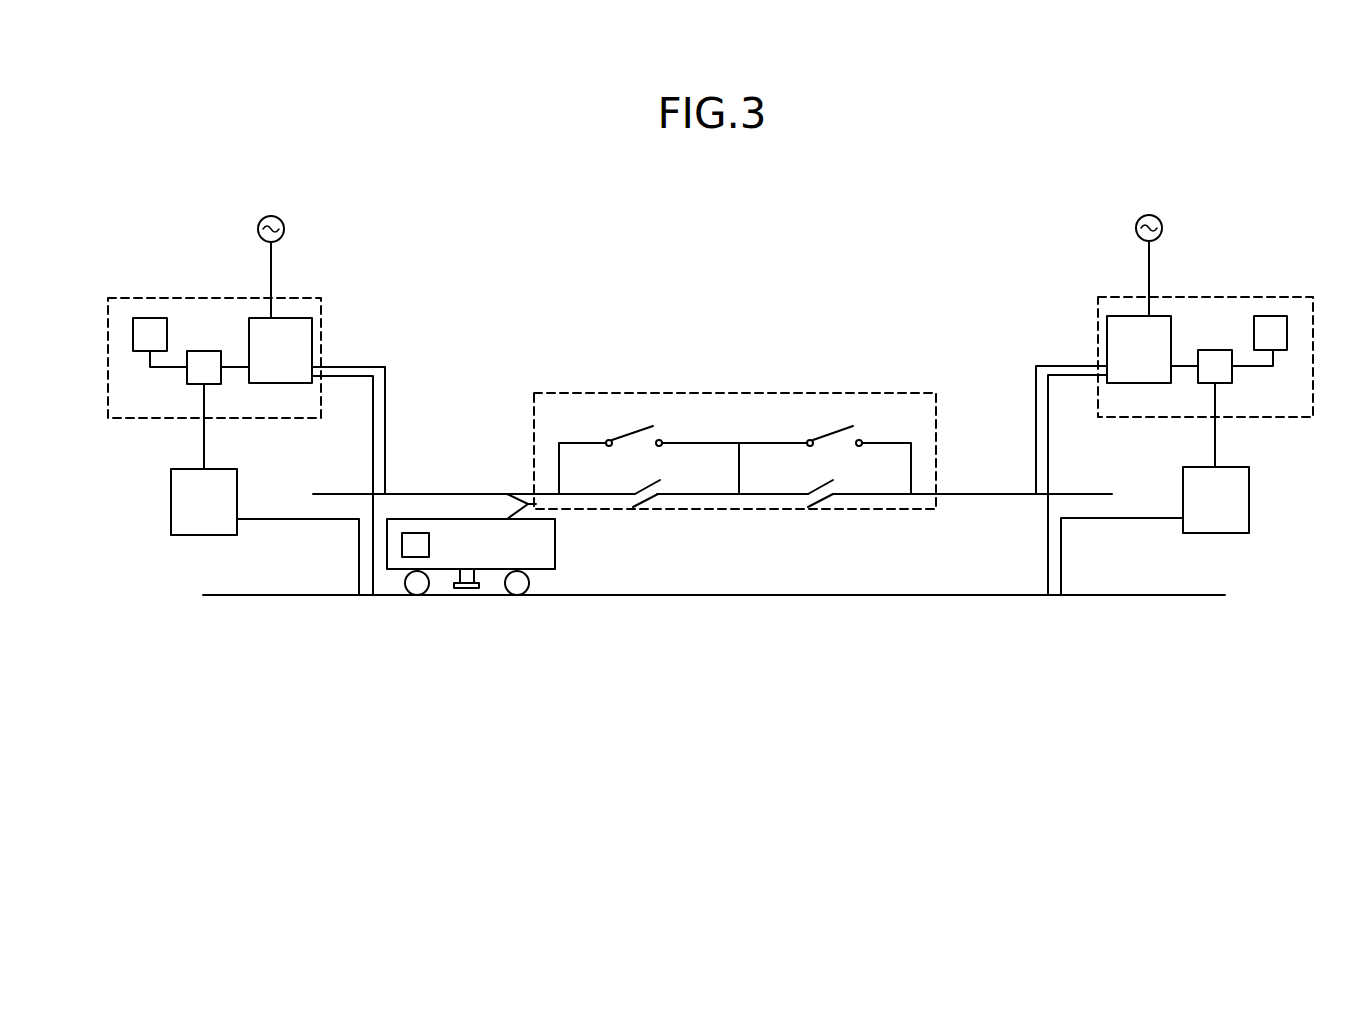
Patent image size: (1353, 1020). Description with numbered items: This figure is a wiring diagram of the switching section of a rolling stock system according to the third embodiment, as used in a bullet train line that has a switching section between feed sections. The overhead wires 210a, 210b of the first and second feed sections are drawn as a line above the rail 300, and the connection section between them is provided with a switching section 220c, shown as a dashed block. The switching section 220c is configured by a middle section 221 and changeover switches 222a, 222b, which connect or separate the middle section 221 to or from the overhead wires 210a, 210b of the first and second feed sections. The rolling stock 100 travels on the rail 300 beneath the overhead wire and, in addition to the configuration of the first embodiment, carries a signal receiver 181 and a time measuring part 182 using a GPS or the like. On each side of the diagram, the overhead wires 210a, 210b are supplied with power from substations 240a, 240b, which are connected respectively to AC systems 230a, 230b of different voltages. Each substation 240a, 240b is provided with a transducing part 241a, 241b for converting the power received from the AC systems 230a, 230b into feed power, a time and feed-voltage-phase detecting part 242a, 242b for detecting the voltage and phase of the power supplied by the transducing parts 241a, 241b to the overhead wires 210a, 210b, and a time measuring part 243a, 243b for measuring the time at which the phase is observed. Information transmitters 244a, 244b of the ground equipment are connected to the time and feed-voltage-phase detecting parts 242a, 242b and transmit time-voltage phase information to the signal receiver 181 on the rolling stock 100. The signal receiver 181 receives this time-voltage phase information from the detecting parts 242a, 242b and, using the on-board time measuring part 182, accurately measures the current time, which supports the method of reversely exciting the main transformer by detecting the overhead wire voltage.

The rolling stock 100 is at (456, 572).
The signal receiver 181 is at (467, 596).
The time measuring part 182 is at (408, 543).
The overhead wire of the first feed section 210a is at (448, 494).
The overhead wire of the second feed section 210b is at (1017, 490).
The switching section 220c is at (735, 427).
The middle section 221 is at (711, 443).
The changeover switch 222a is at (637, 430).
The changeover switch 222b is at (843, 430).
The AC system 230a is at (270, 216).
The AC system 230b is at (1145, 216).
The substation 240a is at (237, 326).
The substation 240b is at (1177, 328).
The transducing part 241a is at (308, 332).
The transducing part 241b is at (1117, 357).
The time and feed-voltage-phase detecting part 242a is at (208, 351).
The time and feed-voltage-phase detecting part 242b is at (1220, 350).
The time measuring part 243a is at (137, 317).
The time measuring part 243b is at (1275, 316).
The information transmitter 244a is at (171, 497).
The information transmitter 244b is at (1249, 495).
The rail 300 is at (653, 596).